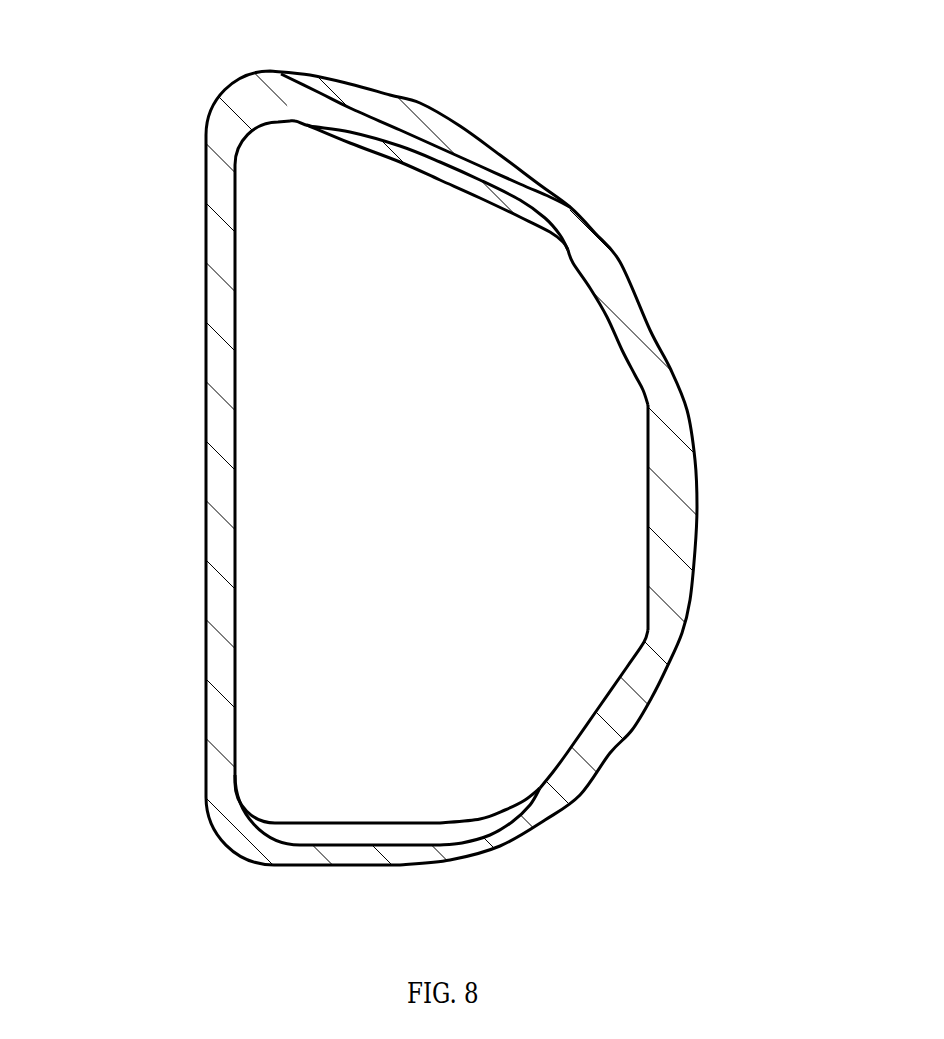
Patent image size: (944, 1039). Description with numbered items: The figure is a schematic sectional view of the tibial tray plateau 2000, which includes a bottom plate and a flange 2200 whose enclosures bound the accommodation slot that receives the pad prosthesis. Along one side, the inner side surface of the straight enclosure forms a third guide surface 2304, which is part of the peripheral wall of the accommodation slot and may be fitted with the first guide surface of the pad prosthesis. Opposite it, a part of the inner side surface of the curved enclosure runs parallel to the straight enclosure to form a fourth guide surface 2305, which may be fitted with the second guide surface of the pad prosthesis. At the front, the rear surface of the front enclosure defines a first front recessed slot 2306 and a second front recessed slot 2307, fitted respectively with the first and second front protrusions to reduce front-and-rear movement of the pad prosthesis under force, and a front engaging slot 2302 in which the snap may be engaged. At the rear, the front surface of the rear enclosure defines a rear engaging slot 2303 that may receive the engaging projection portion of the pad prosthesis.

The tibial tray plateau 2000 is at (205, 723).
The flange 2200 is at (580, 760).
The front engaging slot 2302 is at (480, 193).
The rear engaging slot 2303 is at (377, 835).
The third guide surface 2304 is at (235, 465).
The fourth guide surface 2305 is at (648, 496).
The first front recessed slot 2306 is at (257, 133).
The second front recessed slot 2307 is at (583, 263).